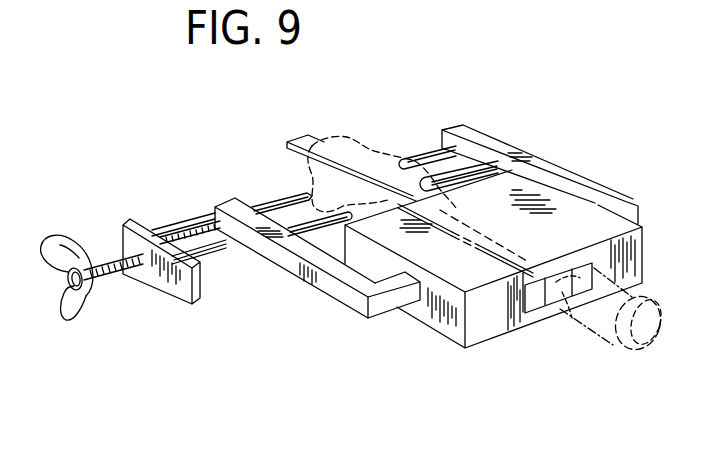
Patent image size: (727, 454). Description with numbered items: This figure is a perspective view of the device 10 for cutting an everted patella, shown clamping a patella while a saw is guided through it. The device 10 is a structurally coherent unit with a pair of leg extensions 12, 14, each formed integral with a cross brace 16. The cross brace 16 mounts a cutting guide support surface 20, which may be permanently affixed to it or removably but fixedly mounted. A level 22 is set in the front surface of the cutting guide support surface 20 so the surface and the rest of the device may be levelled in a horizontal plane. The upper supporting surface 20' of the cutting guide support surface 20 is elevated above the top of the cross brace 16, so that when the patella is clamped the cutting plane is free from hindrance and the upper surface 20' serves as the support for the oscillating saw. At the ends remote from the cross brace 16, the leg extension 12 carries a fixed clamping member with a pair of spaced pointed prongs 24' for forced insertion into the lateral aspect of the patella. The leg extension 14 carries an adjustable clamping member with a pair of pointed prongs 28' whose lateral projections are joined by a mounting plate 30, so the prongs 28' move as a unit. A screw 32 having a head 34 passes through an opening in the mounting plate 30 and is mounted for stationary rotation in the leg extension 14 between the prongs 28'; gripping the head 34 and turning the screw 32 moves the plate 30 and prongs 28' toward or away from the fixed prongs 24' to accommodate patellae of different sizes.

The device for cutting an everted patella 10 is at (431, 349).
The leg extension 12 is at (553, 170).
The leg extension 14 is at (332, 288).
The cross brace 16 is at (386, 303).
The cutting guide support surface 20 is at (493, 276).
The upper supporting surface 20' is at (477, 233).
The level 22 is at (537, 300).
The pointed prongs 24' is at (314, 174).
The pointed prongs 28' is at (232, 189).
The mounting plate 30 is at (185, 283).
The screw 32 is at (120, 270).
The head 34 is at (77, 313).